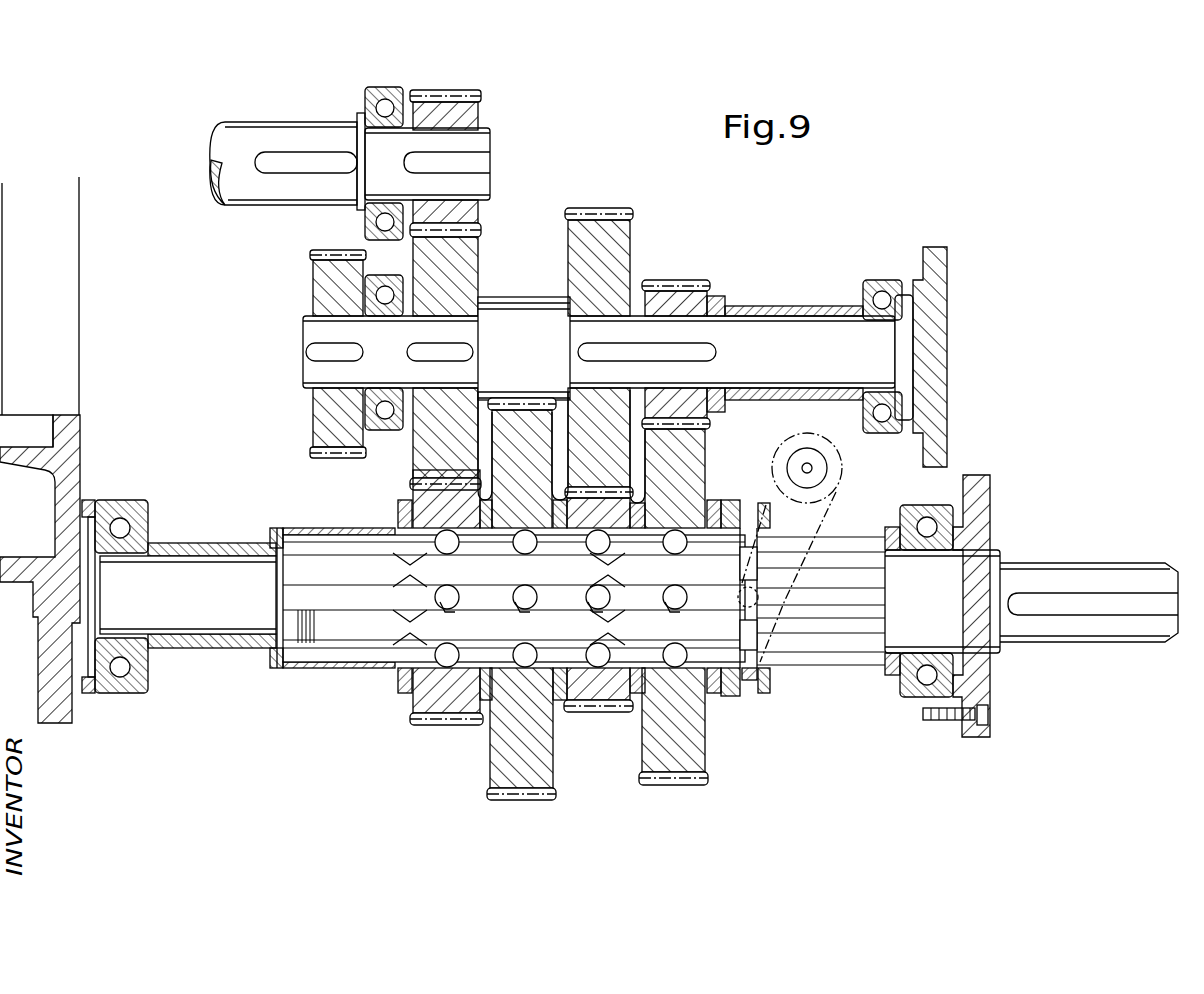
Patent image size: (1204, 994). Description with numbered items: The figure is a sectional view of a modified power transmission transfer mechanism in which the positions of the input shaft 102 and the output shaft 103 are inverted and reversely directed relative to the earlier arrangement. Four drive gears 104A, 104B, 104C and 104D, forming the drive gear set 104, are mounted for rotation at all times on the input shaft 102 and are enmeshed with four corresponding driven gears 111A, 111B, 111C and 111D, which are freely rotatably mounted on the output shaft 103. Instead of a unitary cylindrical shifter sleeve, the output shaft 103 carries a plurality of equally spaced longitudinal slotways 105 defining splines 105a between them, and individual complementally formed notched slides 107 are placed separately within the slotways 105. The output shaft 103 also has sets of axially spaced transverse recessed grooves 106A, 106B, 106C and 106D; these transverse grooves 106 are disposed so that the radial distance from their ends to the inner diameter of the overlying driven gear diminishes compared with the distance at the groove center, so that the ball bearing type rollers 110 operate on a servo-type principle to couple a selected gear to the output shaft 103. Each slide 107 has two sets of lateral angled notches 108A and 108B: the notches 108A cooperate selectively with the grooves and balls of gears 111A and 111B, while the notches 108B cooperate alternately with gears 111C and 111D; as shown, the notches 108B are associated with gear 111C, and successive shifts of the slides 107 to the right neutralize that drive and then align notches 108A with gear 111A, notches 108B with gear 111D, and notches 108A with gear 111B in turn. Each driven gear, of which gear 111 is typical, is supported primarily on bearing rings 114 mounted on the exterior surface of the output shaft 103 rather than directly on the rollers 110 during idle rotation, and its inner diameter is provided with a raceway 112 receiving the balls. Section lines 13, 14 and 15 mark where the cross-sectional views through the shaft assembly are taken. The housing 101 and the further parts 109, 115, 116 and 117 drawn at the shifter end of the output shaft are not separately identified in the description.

The housing 101 is at (80, 440).
The input shaft 102 is at (784, 326).
The output shaft 103 is at (197, 640).
The drive gears 104 is at (567, 314).
The drive gear 104A is at (462, 268).
The drive gear 104B is at (525, 297).
The drive gear 104C is at (612, 208).
The drive gear 104D is at (683, 291).
The longitudinal slotways 105 is at (290, 633).
The splines 105a is at (290, 592).
The transverse grooves 106 is at (560, 624).
The transverse recessed groove 106A is at (458, 606).
The transverse recessed groove 106B is at (525, 607).
The transverse recessed groove 106C is at (593, 612).
The transverse recessed groove 106D is at (660, 614).
The notched slides 107 is at (328, 618).
The notches 108A is at (398, 612).
The notches 108B is at (590, 610).
The shift fork 109 is at (750, 633).
The ball bearing type rollers 110 is at (452, 552).
The driven gear 111 is at (559, 633).
The driven gear 111A is at (420, 727).
The driven gear 111B is at (517, 796).
The driven gear 111C is at (578, 708).
The driven gear 111D is at (650, 640).
The raceway 112 is at (412, 697).
The bearing rings 114 is at (657, 523).
The ring 115 is at (765, 692).
The ring 116 is at (748, 682).
The shift cam 117 is at (820, 492).
The section line 13 is at (445, 517).
The section line 14 is at (600, 513).
The section line 15 is at (538, 513).